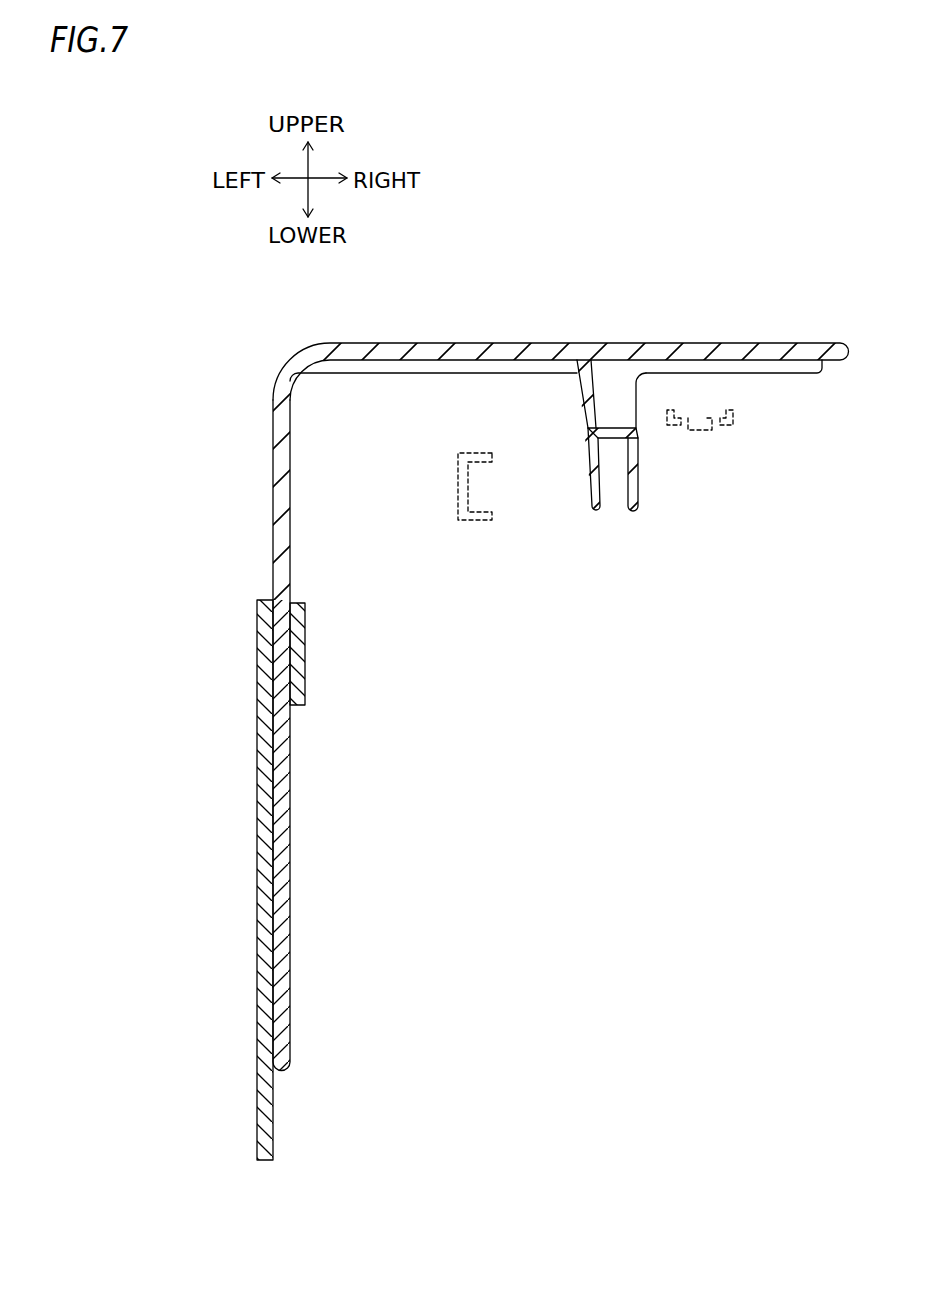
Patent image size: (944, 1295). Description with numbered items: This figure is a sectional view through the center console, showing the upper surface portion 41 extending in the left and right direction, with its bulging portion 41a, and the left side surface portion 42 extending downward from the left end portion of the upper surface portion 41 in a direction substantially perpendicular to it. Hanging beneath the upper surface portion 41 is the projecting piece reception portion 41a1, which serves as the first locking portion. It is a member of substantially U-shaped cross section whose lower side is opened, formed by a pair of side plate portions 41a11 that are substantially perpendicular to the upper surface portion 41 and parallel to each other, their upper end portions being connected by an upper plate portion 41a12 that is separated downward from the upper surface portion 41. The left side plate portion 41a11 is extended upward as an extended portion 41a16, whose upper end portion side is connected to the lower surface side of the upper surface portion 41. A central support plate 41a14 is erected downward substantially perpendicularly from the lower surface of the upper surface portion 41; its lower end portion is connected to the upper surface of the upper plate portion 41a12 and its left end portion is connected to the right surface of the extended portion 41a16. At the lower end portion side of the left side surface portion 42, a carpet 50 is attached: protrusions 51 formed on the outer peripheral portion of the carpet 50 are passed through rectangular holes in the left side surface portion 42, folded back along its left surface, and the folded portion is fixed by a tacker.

The upper surface portion 41 is at (561, 707).
The bulging portion 41a is at (612, 343).
The projecting piece reception portion 41a1 is at (588, 436).
The side plate portion 41a11 is at (590, 478).
The upper plate portion 41a12 is at (613, 427).
The central support plate 41a14 is at (637, 407).
The extended portion 41a16 is at (577, 412).
The left side surface portion 42 is at (273, 494).
The carpet 50 is at (257, 1110).
The protrusion 51 is at (305, 652).